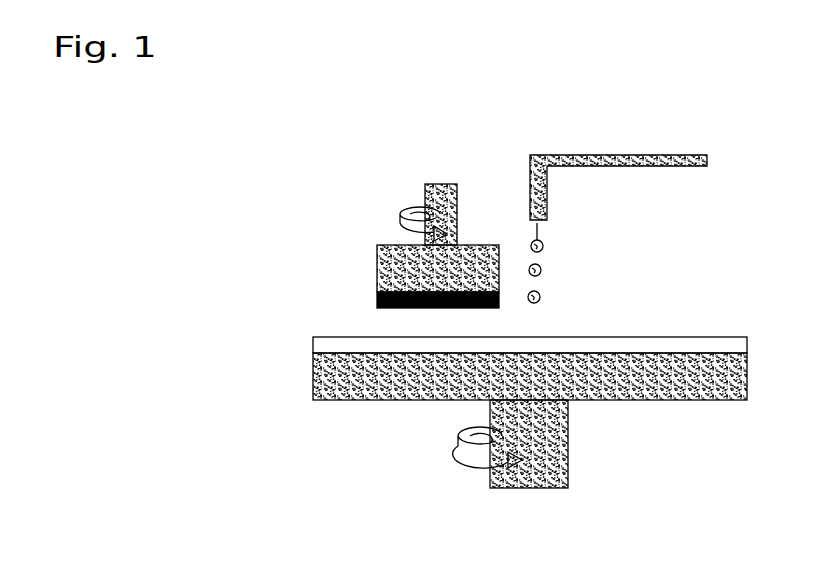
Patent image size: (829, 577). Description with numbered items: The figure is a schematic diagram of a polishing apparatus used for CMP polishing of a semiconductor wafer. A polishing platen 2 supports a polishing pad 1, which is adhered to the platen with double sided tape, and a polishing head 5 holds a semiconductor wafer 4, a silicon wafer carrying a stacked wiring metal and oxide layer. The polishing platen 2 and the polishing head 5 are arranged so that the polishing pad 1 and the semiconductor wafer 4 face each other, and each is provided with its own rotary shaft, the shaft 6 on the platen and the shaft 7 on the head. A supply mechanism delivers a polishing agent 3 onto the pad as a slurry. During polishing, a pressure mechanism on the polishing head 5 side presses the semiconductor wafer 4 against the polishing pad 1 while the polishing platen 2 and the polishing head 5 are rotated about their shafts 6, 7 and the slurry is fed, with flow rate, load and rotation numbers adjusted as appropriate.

The polishing pad 1 is at (607, 345).
The polishing platen 2 is at (610, 383).
The polishing agent 3 is at (542, 292).
The semiconductor wafer 4 is at (378, 295).
The polishing head 5 is at (393, 242).
The rotary shaft 6 is at (553, 432).
The rotary shaft 7 is at (445, 200).